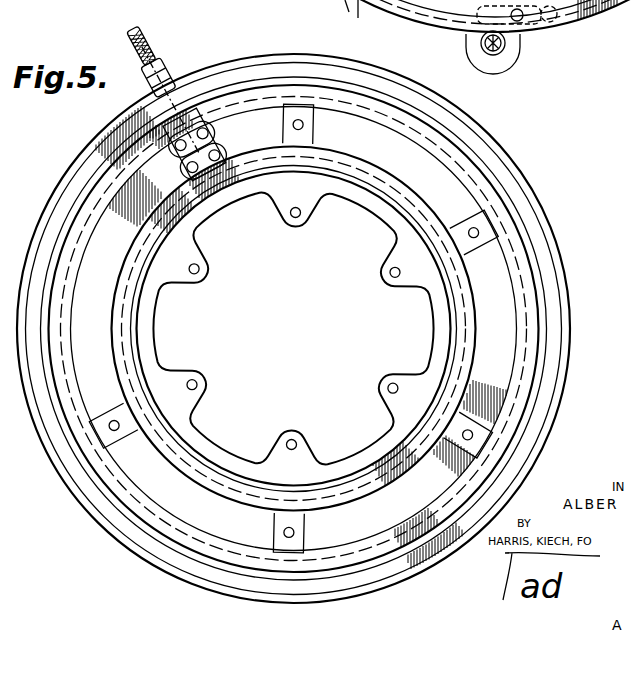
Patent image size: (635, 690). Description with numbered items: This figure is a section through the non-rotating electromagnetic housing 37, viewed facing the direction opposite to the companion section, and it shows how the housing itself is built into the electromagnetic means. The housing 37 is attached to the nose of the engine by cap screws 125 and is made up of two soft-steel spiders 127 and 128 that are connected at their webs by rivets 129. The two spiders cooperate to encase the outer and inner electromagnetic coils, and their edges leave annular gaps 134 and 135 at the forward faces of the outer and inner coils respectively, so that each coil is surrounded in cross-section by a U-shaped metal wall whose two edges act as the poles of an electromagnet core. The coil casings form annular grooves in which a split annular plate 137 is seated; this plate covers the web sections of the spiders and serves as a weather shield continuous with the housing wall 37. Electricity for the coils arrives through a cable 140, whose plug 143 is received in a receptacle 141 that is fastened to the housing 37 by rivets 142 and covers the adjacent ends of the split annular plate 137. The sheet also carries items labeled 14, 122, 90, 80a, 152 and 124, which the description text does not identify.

The electromagnetic housing 37 is at (572, 316).
The spider 127 is at (477, 147).
The spider 128 is at (502, 208).
The annular gap 134 is at (182, 544).
The split annular plate 137 is at (388, 146).
The rivets 129 is at (478, 250).
The annular gap 135 is at (234, 477).
The cap screws 125 is at (381, 327).
The valve fitting 14 is at (185, 126).
The cable 140 is at (141, 46).
The plug 143 is at (158, 77).
The receptacle 141 is at (220, 139).
The rivets 142 is at (173, 157).
The rim of adjacent figure 122 is at (460, 2).
The boss 90 is at (521, 57).
The member 80a is at (358, 22).
The member 152 is at (323, 11).
The member 124 is at (606, 27).